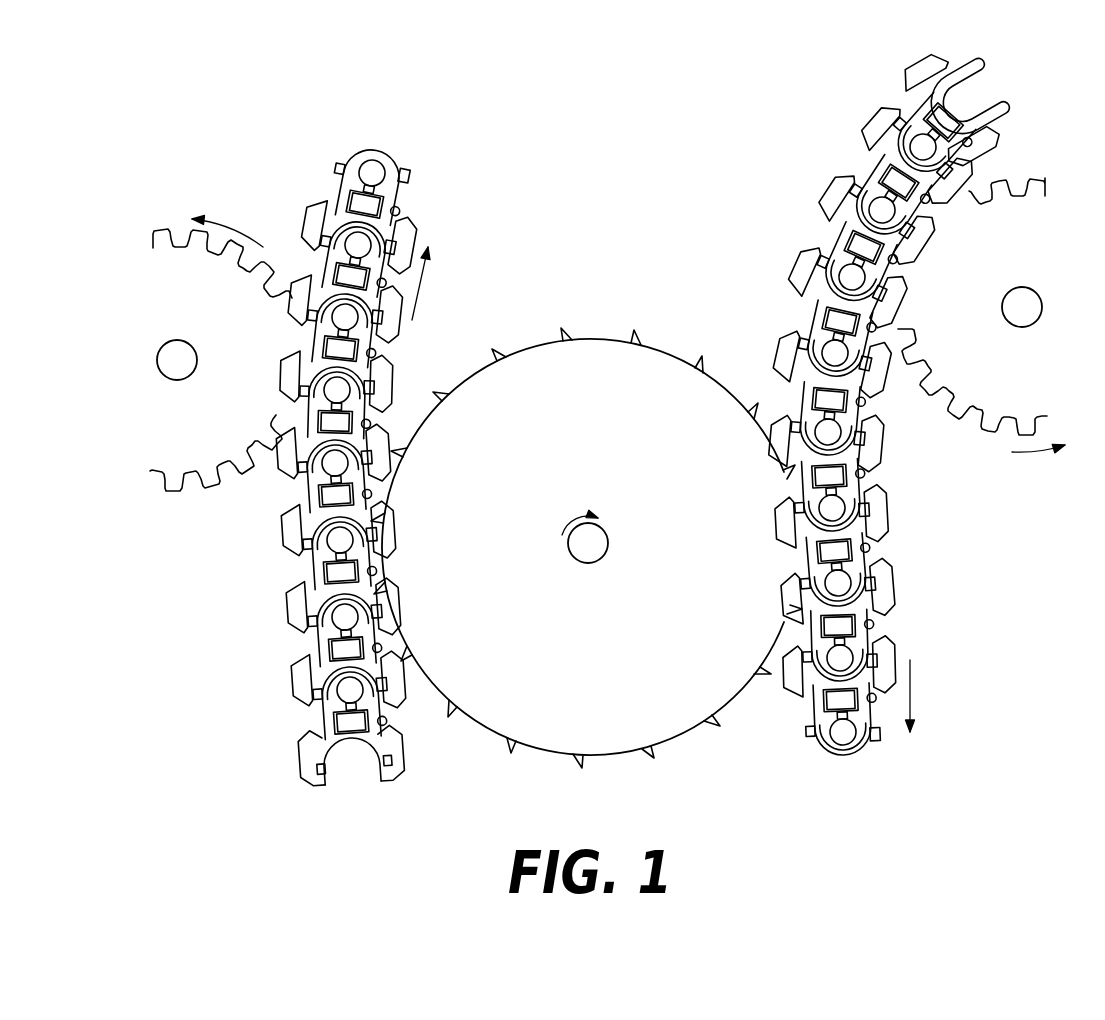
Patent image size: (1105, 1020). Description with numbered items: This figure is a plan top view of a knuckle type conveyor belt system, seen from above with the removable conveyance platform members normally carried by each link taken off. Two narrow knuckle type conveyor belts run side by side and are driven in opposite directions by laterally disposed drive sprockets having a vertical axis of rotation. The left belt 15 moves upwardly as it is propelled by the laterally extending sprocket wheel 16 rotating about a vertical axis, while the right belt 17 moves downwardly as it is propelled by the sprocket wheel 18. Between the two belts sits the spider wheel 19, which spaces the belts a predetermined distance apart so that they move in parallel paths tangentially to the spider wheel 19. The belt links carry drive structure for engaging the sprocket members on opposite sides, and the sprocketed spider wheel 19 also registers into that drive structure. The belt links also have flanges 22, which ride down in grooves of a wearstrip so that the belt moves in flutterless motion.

The left belt 15 is at (282, 577).
The sprocket wheel 16 is at (212, 430).
The right belt 17 is at (883, 404).
The sprocket wheel 18 is at (993, 365).
The spider wheel 19 is at (622, 392).
The flanges 22 is at (792, 676).